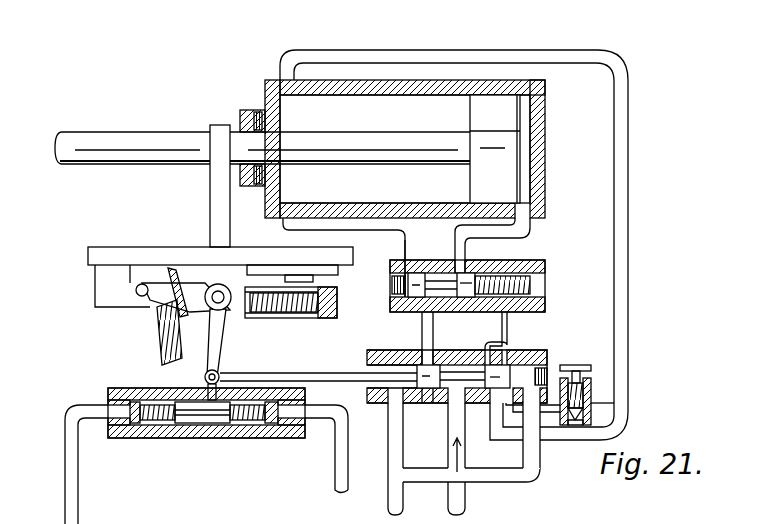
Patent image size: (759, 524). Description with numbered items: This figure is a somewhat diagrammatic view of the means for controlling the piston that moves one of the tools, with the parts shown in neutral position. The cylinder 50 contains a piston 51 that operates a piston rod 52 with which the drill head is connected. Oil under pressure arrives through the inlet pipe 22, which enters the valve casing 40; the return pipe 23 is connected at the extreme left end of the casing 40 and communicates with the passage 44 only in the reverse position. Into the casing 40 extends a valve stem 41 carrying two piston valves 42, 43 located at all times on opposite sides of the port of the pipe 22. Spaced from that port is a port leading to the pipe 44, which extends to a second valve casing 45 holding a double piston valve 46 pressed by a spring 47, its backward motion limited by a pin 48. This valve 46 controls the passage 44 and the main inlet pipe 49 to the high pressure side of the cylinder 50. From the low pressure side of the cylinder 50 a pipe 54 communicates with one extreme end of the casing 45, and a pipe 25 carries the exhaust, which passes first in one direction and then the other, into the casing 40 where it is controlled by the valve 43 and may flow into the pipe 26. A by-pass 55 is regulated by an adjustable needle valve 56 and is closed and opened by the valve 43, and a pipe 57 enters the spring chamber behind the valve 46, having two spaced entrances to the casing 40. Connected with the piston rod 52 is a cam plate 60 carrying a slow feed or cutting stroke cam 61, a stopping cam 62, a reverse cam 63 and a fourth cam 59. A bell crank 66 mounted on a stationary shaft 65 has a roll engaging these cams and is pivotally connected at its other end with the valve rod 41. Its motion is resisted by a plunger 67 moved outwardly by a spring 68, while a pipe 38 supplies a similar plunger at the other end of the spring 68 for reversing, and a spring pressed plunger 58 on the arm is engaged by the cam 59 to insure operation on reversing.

The cylinder 50 is at (433, 80).
The piston 51 is at (495, 140).
The piston rod 52 is at (130, 132).
The pipe 25 is at (628, 284).
The pipe 54 is at (283, 228).
The second valve casing 45 is at (432, 242).
The main inlet pipe 49 is at (530, 226).
The double piston valve 46 is at (471, 276).
The pin 48 is at (545, 284).
The spring 47 is at (520, 276).
The pipe 57 is at (512, 322).
The pipe 44 is at (430, 331).
The valve casing 40 is at (463, 350).
The valve stem 41 is at (318, 373).
The piston valve 42 is at (426, 403).
The piston valve 43 is at (480, 410).
The return pipe 23 is at (388, 499).
The inlet pipe 22 is at (465, 495).
The pipe 26 is at (537, 459).
The by-pass 55 is at (560, 400).
The adjustable needle valve 56 is at (592, 406).
The cam plate 60 is at (126, 256).
The fourth cam 59 is at (335, 270).
The stopping cam 62 is at (112, 298).
The spring pressed plunger 58 is at (182, 262).
The slow feed cam 61 is at (200, 262).
The stationary shaft 65 is at (222, 302).
The bell crank 66 is at (158, 310).
The reverse cam 63 is at (318, 283).
The spring 68 is at (198, 436).
The plunger 67 is at (142, 436).
The pipe 38 is at (65, 467).